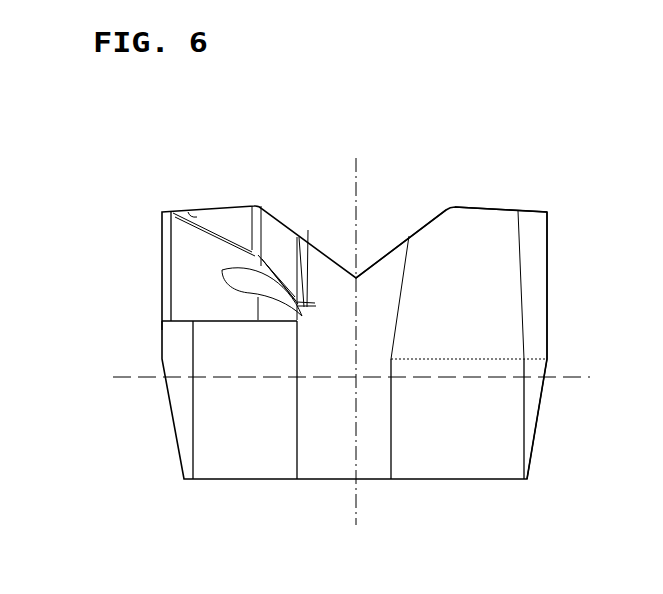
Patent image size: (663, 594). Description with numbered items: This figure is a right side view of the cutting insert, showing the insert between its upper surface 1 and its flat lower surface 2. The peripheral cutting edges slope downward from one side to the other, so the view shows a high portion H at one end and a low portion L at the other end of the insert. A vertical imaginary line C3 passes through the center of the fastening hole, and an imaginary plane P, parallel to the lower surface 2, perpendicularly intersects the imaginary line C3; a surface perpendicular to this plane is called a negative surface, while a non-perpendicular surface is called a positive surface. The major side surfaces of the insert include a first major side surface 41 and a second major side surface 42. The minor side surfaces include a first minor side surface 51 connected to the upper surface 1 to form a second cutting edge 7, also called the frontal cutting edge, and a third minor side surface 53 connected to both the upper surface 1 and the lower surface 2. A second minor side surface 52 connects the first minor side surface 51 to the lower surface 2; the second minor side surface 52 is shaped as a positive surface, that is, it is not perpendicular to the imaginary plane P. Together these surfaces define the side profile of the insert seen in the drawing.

The upper surface 1 is at (292, 208).
The lower surface 2 is at (374, 488).
The second cutting edge 7 is at (493, 208).
The first major side surface 41 is at (548, 248).
The second major side surface 42 is at (539, 413).
The first minor side surface 51 is at (502, 294).
The second minor side surface 52 is at (502, 442).
The third minor side surface 53 is at (222, 430).
The imaginary line C3 is at (356, 330).
The imaginary plane P is at (360, 377).
The high portion H is at (547, 212).
The low portion L is at (162, 322).